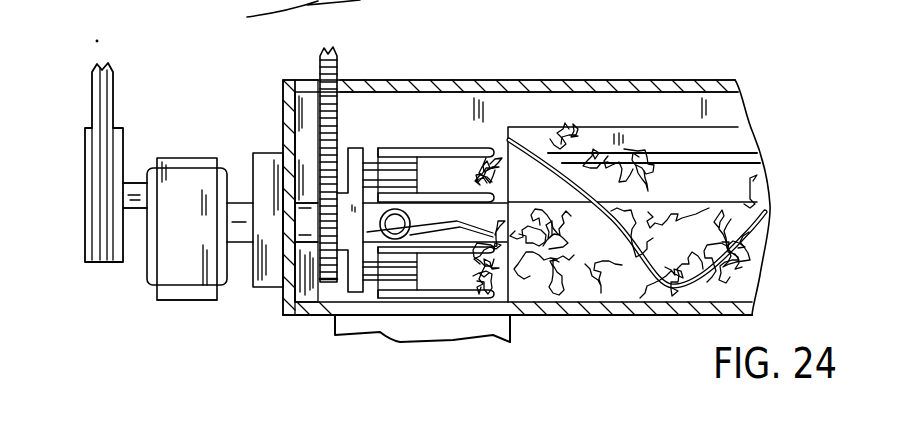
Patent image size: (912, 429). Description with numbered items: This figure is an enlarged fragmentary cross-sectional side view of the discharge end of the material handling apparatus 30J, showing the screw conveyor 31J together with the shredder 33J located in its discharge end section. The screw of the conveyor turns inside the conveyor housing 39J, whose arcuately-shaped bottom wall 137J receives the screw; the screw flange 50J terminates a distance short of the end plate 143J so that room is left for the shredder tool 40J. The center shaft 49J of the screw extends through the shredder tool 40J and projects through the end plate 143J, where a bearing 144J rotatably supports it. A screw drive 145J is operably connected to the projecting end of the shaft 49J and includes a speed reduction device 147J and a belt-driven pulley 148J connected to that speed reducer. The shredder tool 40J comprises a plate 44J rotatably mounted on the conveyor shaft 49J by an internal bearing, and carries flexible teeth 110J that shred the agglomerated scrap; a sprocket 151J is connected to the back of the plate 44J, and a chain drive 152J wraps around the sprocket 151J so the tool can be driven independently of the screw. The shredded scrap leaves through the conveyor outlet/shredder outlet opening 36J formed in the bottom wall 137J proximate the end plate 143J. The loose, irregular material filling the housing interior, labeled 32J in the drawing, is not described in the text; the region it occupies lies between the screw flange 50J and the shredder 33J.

The material handling apparatus 30J is at (460, 50).
The screw conveyor 31J is at (562, 77).
The foam packing 32J is at (577, 293).
The shredder 33J is at (365, 122).
The conveyor outlet/shredder outlet opening 36J is at (482, 316).
The conveyor housing 39J is at (672, 80).
The shredder tool 40J is at (400, 138).
The plate 44J is at (357, 293).
The center shaft 49J is at (242, 203).
The screw flange 50J is at (557, 196).
The flexible teeth 110J is at (435, 297).
The bottom wall 137J is at (273, 16).
The end plate 143J is at (283, 107).
The bearing 144J is at (262, 288).
The screw drive 145J is at (160, 305).
The speed reduction device 147J is at (187, 303).
The belt-driven pulley 148J is at (85, 225).
The sprocket 151J is at (320, 178).
The chain drive 152J is at (337, 60).